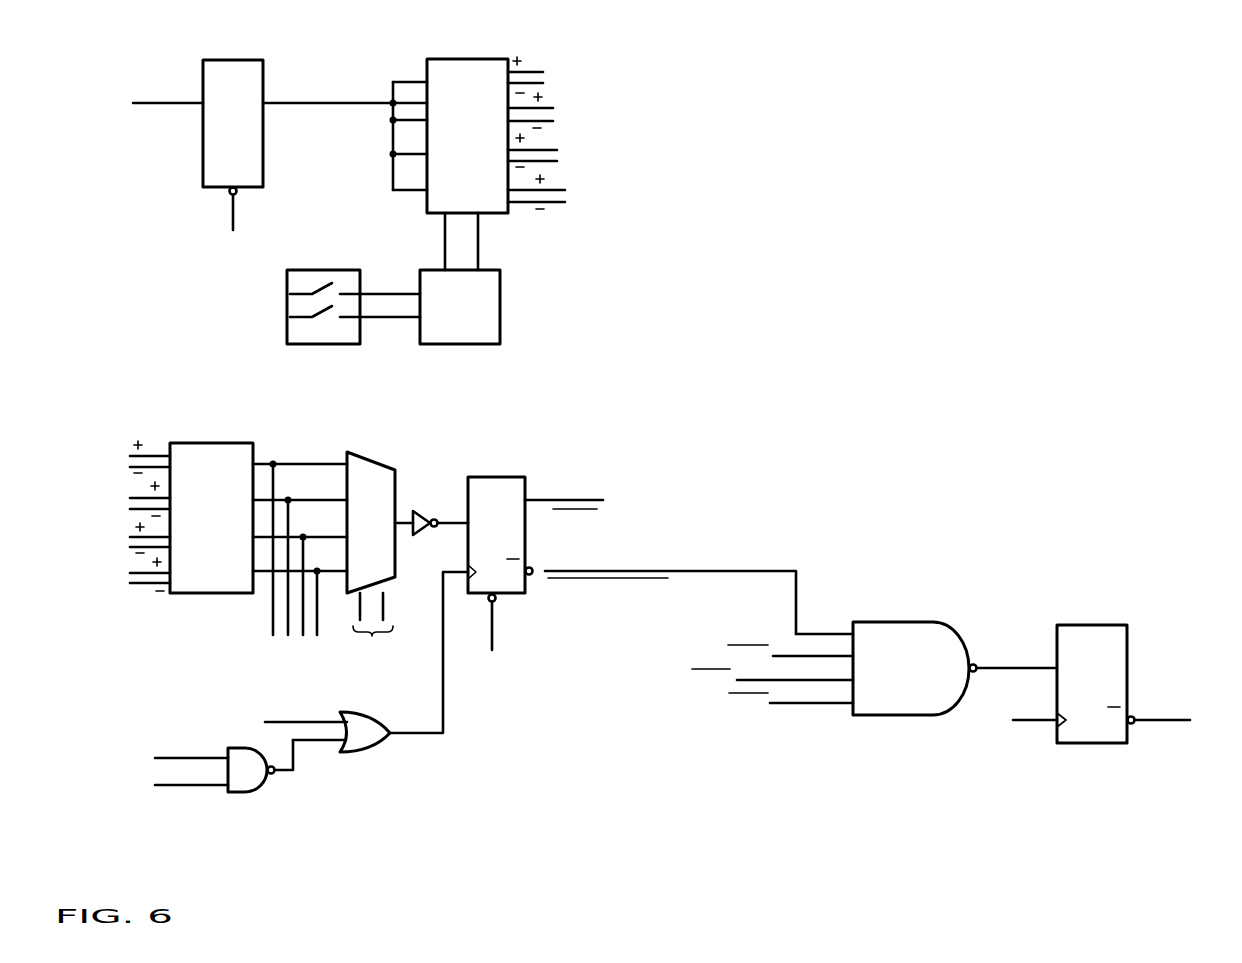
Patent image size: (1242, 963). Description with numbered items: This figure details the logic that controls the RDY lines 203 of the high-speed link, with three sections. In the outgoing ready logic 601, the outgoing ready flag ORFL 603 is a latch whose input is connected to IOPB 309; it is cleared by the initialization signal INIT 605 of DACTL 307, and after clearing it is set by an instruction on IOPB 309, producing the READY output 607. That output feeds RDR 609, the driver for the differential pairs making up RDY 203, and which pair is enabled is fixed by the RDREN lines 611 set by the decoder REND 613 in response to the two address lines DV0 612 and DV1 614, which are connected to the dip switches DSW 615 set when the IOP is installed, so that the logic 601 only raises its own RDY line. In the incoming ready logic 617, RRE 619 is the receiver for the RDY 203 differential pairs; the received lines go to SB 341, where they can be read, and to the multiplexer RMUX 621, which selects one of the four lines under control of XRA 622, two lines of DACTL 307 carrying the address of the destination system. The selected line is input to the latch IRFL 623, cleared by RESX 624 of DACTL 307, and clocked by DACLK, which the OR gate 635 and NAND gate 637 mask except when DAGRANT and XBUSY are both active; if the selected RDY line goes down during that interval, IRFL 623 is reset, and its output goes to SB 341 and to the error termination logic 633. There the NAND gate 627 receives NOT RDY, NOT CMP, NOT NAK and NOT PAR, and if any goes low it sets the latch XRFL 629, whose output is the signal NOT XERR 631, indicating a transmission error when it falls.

The outgoing ready logic 601 is at (414, 352).
The outgoing ready flag (ORFL) 603 is at (238, 60).
The IOPB 309 is at (168, 117).
The READY signal 607 is at (328, 127).
The initialization signal (INIT) 605 is at (261, 225).
The DACTL 307 is at (347, 472).
The RDR 609 is at (449, 136).
The RDY lines 203 is at (414, 354).
The RDREN lines 611 is at (445, 227).
The REND 613 is at (460, 307).
The dip switches (DSW) 615 is at (287, 333).
The DV0 612 is at (402, 292).
The DV1 614 is at (414, 318).
The incoming ready logic 617 is at (424, 646).
The RRE 619 is at (211, 518).
The SB 341 is at (489, 574).
The RMUX 621 is at (397, 484).
The XRA 622 is at (393, 627).
The IRFL 623 is at (516, 477).
The RESX 624 is at (553, 630).
The OR gate 635 is at (368, 748).
The NAND gate 637 is at (258, 790).
The error termination logic 633 is at (955, 705).
The NAND gate 627 is at (834, 669).
The XRFL 629 is at (1078, 625).
The XERR output 631 is at (1218, 729).